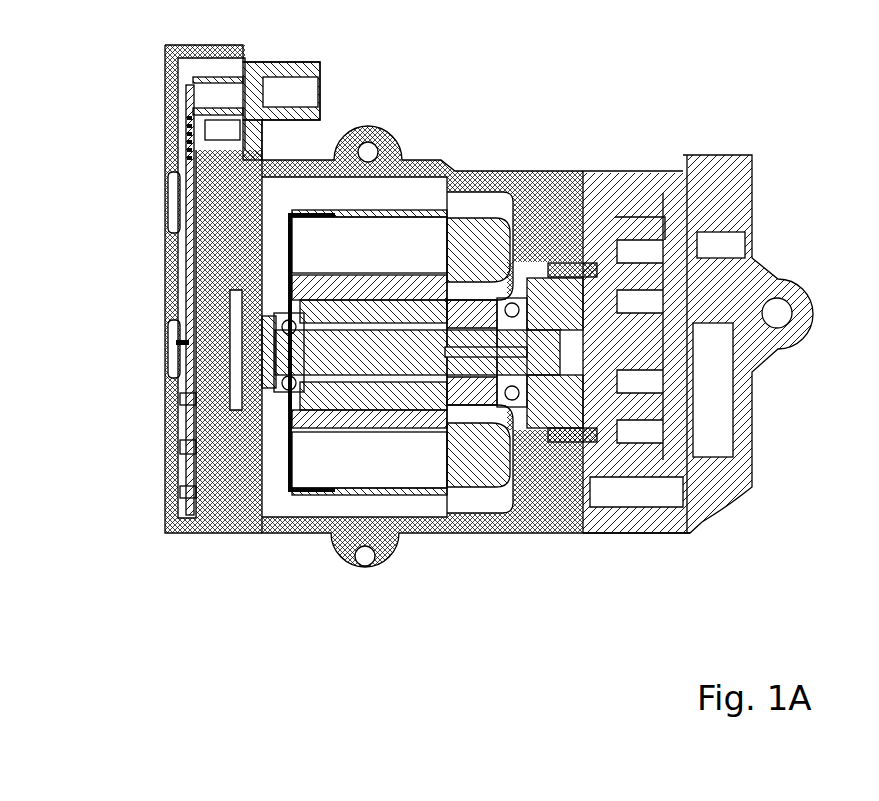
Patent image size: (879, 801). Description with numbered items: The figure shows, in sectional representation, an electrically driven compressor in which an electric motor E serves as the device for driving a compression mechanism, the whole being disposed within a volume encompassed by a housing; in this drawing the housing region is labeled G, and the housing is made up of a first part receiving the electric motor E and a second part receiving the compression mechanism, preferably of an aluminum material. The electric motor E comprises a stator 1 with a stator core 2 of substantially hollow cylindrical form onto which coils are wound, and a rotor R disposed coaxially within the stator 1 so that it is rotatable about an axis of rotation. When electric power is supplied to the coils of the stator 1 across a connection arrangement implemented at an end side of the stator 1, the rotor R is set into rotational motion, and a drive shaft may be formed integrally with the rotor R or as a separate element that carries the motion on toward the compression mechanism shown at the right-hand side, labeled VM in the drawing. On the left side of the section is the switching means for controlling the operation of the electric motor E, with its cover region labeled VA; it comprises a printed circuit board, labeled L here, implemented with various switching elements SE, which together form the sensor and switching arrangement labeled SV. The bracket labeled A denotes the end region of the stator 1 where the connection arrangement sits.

The housing G is at (440, 157).
The electric motor E is at (382, 194).
The rotor R is at (383, 390).
The stator 1 is at (468, 380).
The stator core 2 is at (442, 426).
The stator carrier A is at (323, 405).
The gear mechanism VM is at (623, 190).
The cover / connector assembly VA is at (170, 212).
The sensor arrangement SV is at (111, 306).
The switching elements SE is at (165, 488).
The printed circuit board L is at (163, 447).